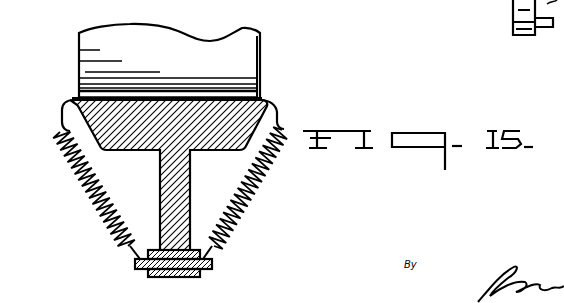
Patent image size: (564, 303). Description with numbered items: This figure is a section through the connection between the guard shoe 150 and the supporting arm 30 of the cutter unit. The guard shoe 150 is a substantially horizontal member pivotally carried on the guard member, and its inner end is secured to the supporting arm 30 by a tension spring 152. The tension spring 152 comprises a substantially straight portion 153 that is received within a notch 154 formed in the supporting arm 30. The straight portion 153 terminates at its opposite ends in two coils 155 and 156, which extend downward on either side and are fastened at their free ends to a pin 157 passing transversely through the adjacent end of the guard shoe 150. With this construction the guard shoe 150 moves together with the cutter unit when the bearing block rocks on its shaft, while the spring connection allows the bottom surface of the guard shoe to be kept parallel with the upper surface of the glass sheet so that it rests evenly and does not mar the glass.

The supporting arm 30 is at (190, 155).
The guard shoe 150 is at (183, 279).
The tension spring 152 is at (278, 119).
The straight portion 153 is at (262, 96).
The notch 154 is at (208, 84).
The coil 155 is at (74, 180).
The coil 156 is at (268, 176).
The pin 157 is at (162, 276).